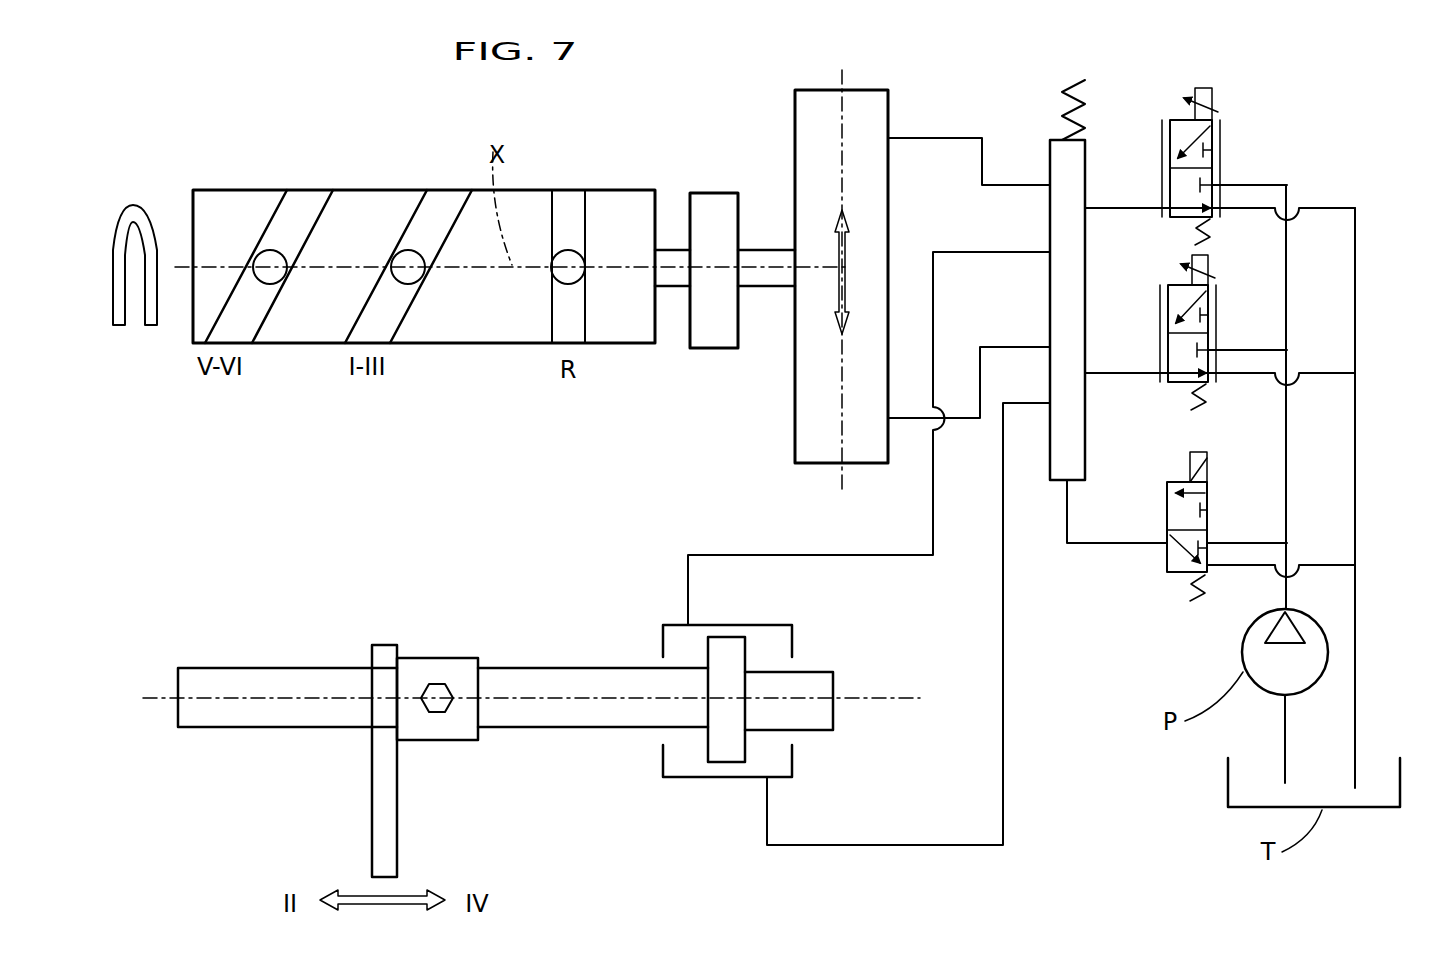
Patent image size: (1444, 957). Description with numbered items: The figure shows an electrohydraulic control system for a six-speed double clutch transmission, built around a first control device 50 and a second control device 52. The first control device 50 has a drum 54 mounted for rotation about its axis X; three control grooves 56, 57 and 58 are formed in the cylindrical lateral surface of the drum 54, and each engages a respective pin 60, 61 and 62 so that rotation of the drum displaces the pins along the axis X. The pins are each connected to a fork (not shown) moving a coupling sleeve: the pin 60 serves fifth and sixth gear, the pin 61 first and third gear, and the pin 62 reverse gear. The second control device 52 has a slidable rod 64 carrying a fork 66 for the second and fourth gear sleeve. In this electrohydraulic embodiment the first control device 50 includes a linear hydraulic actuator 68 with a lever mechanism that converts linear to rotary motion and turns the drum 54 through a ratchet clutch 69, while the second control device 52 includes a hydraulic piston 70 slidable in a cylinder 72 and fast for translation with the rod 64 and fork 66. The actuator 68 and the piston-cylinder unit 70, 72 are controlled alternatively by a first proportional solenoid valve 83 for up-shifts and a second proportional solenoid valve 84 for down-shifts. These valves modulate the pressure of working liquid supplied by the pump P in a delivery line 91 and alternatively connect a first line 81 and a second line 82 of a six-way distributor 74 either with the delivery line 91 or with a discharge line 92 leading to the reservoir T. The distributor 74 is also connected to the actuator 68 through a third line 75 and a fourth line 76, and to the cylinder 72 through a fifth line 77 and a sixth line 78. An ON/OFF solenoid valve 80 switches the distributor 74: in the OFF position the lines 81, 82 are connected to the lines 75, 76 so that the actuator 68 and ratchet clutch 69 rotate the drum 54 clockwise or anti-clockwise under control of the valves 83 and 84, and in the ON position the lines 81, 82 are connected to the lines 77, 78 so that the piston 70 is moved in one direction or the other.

The first control device 50 is at (595, 122).
The second control device 52 is at (594, 636).
The drum 54 is at (462, 330).
The control groove 56 is at (294, 210).
The control groove 57 is at (437, 205).
The control groove 58 is at (567, 210).
The pin 60 is at (272, 275).
The pin 61 is at (413, 275).
The pin 62 is at (572, 275).
The slidable rod 64 is at (312, 677).
The fork 66 is at (390, 803).
The linear hydraulic actuator 68 is at (818, 455).
The ratchet clutch 69 is at (710, 200).
The hydraulic piston 70 is at (735, 637).
The cylinder 72 is at (683, 780).
The six-way distributor 74 is at (1050, 170).
The third line 75 is at (933, 137).
The fourth line 76 is at (990, 345).
The fifth line 77 is at (963, 250).
The sixth line 78 is at (1005, 660).
The ON/OFF solenoid valve 80 is at (1165, 580).
The first line 81 is at (1120, 205).
The second line 82 is at (1118, 375).
The first proportional solenoid valve 83 is at (1170, 120).
The second proportional solenoid valve 84 is at (1165, 320).
The delivery line 91 is at (1285, 475).
The discharge line 92 is at (1358, 450).